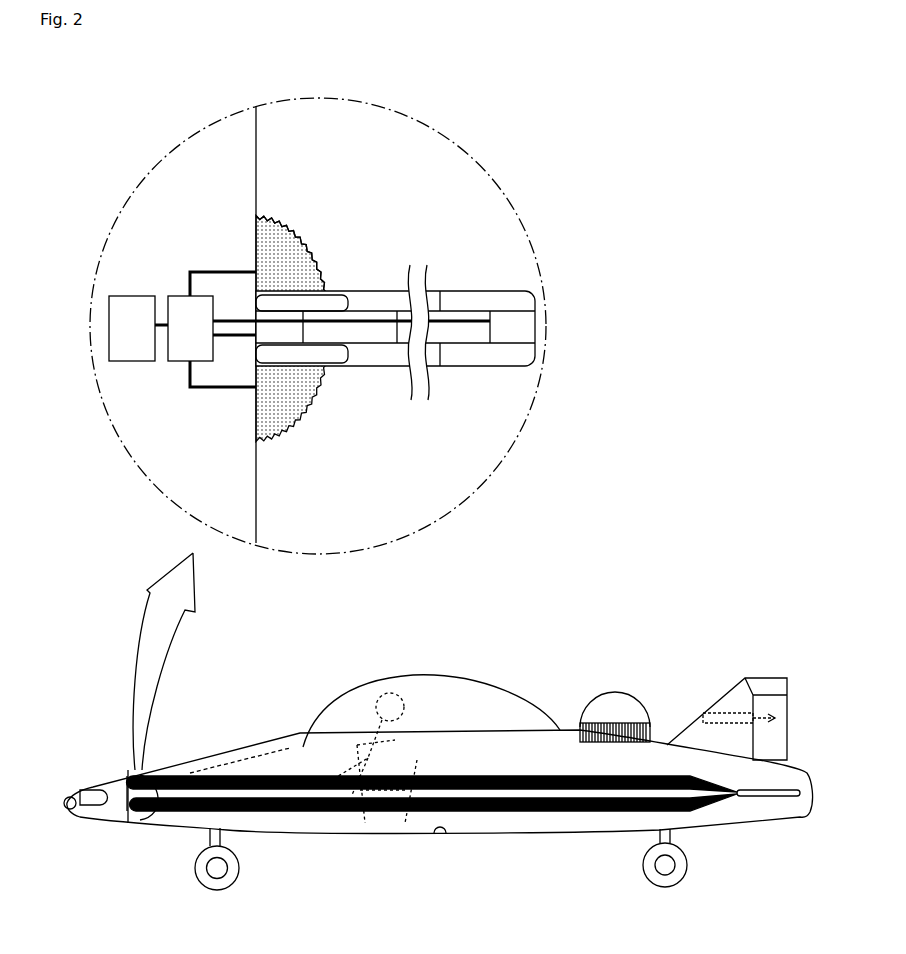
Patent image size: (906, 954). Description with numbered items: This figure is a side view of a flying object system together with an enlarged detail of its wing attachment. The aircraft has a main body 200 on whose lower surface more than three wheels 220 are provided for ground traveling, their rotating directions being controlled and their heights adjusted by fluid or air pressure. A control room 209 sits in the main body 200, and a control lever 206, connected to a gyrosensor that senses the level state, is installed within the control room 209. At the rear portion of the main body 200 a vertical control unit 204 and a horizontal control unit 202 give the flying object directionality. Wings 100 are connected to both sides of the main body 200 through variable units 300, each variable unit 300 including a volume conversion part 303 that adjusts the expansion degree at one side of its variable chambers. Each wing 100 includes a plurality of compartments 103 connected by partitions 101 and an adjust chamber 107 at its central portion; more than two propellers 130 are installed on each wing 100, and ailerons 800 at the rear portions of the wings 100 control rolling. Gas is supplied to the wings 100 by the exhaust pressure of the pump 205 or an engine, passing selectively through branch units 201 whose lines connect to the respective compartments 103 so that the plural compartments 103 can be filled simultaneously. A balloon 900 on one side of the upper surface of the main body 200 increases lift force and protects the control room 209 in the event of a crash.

The wing 100 is at (507, 793).
The partition 101 is at (348, 354).
The compartment 103 is at (482, 291).
The adjust chamber 107 is at (527, 337).
The propeller 130 is at (493, 778).
The main body 200 is at (180, 758).
The branch unit 201 is at (175, 361).
The horizontal control unit 202 is at (743, 682).
The vertical control unit 204 is at (713, 715).
The pump 205 is at (132, 296).
The control lever 206 is at (293, 767).
The control room 209 is at (305, 735).
The wheel 220 is at (665, 887).
The variable unit 300 is at (275, 253).
The volume conversion part 303 is at (273, 217).
The aileron 800 is at (765, 796).
The balloon 900 is at (612, 687).